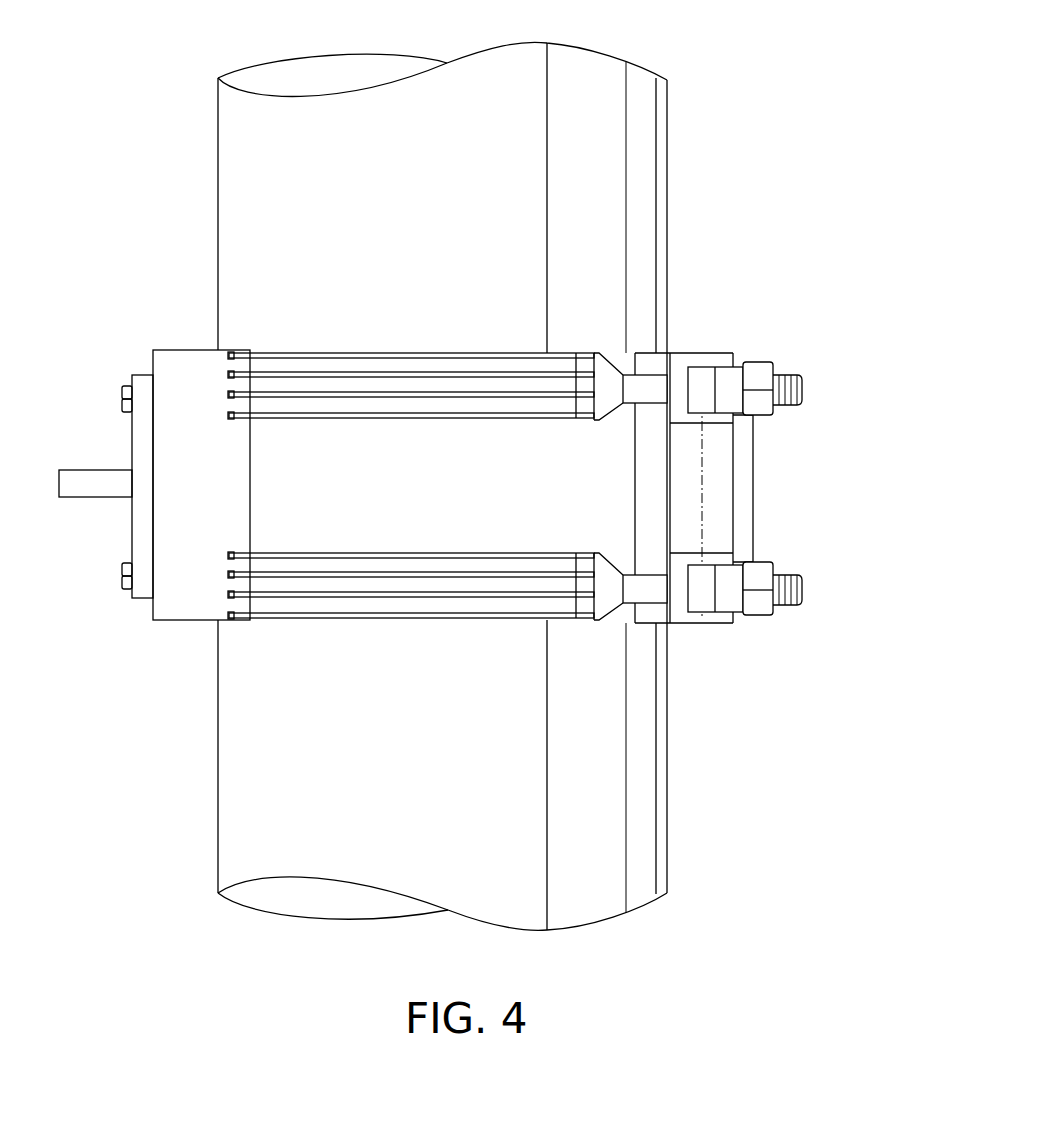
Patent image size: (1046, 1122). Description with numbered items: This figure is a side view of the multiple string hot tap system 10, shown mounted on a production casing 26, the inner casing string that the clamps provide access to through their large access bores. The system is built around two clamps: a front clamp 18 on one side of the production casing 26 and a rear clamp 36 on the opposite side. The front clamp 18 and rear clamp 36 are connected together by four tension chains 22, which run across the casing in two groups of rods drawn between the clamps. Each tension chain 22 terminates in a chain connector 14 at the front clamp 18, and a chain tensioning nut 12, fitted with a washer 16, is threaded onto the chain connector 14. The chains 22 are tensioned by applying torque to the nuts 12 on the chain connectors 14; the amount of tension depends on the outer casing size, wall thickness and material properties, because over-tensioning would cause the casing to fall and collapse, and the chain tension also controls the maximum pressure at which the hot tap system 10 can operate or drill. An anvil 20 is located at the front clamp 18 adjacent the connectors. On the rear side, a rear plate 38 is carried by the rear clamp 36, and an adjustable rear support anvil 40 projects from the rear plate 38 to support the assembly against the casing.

The multiple string hot tap system 10 is at (753, 463).
The chain tensioning nut 12 is at (768, 362).
The chain connector 14 is at (627, 368).
The washer 16 is at (740, 362).
The front clamp 18 is at (684, 488).
The anvil 20 is at (712, 357).
The tension chain 22 is at (357, 353).
The production casing 26 is at (667, 230).
The rear clamp 36 is at (197, 350).
The rear plate 38 is at (130, 438).
The rear support anvil 40 is at (97, 498).